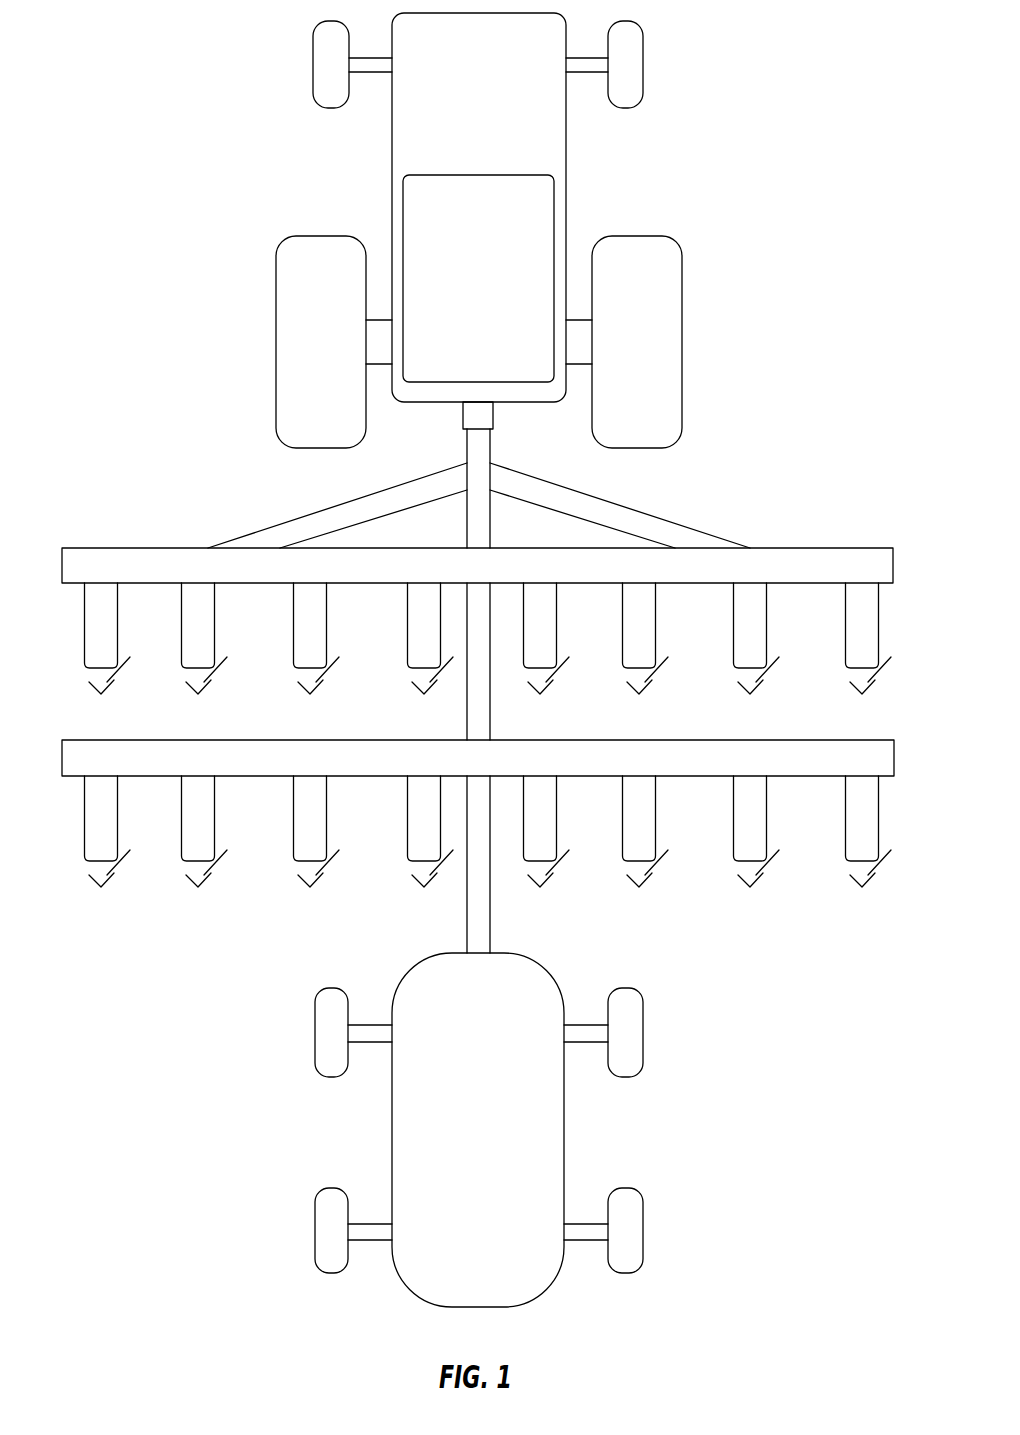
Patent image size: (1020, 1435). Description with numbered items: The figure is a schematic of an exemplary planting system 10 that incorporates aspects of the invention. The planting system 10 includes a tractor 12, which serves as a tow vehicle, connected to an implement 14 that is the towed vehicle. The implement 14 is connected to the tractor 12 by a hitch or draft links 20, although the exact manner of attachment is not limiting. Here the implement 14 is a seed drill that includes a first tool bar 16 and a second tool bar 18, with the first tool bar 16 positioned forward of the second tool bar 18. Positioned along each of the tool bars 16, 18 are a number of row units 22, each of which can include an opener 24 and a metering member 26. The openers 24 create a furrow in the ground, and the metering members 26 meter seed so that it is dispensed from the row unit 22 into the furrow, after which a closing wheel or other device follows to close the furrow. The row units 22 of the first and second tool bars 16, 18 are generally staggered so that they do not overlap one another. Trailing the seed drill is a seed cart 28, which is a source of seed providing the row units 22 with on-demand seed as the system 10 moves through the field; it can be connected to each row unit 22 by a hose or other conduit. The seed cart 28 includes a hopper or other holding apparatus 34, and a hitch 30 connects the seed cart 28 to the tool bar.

The planting system 10 is at (151, 66).
The tractor 12 is at (640, 145).
The implement 14 is at (825, 492).
The first tool bar 16 is at (852, 548).
The second tool bar 18 is at (850, 740).
The draft links 20 is at (285, 520).
The row units 22 is at (84, 620).
The opener 24 is at (215, 668).
The metering member 26 is at (195, 688).
The seed cart 28 is at (596, 973).
The hitch 30 is at (468, 915).
The hopper 34 is at (542, 1125).